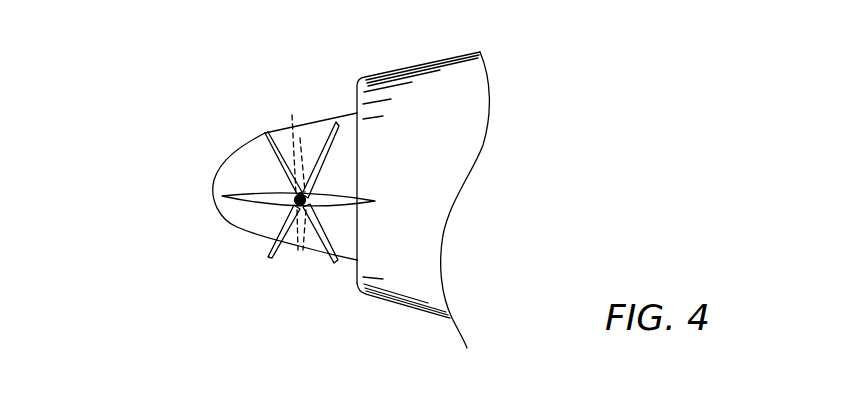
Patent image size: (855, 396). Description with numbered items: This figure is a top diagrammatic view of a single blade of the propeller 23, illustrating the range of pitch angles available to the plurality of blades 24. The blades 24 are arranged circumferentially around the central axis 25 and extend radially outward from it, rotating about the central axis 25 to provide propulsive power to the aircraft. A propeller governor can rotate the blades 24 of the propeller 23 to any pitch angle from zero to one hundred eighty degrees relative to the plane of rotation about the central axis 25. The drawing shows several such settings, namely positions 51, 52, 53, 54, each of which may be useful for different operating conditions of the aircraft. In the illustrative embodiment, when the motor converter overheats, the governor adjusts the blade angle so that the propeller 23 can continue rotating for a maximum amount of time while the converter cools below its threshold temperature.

The propeller 23 is at (321, 102).
The blades 24 is at (293, 104).
The central axis 25 is at (212, 187).
The position 51 is at (264, 133).
The position 52 is at (299, 258).
The position 53 is at (236, 197).
The position 54 is at (268, 258).